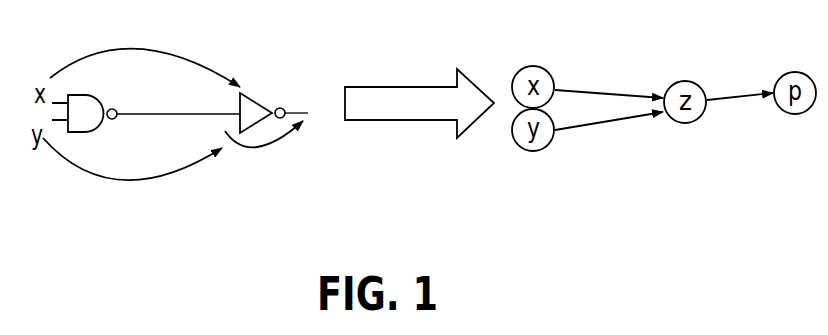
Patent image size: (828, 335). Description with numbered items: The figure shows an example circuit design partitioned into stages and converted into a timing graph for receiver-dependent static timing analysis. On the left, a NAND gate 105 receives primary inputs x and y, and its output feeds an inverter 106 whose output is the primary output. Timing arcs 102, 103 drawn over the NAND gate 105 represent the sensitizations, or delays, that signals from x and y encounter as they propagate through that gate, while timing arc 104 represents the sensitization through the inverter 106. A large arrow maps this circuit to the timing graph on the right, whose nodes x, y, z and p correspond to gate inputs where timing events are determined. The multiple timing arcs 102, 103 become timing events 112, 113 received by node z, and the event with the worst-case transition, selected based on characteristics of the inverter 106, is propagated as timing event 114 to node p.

The timing arc 102 is at (170, 50).
The timing arc 103 is at (110, 180).
The timing arc 104 is at (265, 150).
The NAND gate 105 is at (97, 94).
The inverter 106 is at (252, 93).
The timing event 112 is at (588, 92).
The timing event 113 is at (600, 125).
The timing event 114 is at (742, 98).